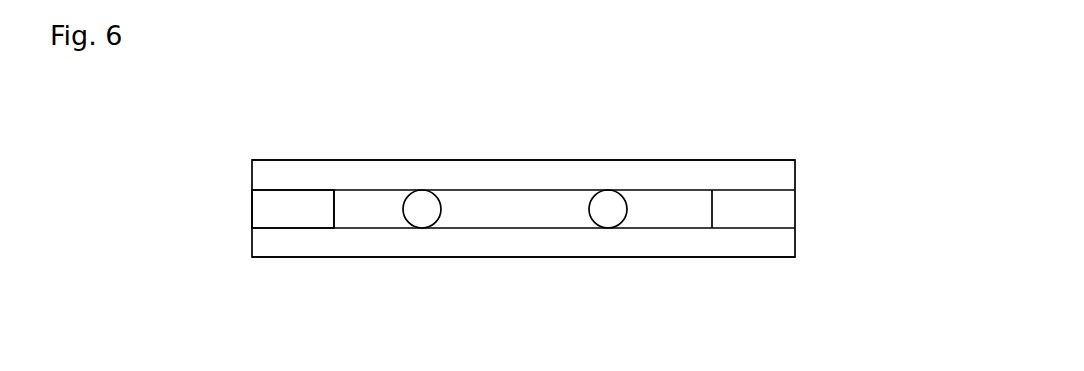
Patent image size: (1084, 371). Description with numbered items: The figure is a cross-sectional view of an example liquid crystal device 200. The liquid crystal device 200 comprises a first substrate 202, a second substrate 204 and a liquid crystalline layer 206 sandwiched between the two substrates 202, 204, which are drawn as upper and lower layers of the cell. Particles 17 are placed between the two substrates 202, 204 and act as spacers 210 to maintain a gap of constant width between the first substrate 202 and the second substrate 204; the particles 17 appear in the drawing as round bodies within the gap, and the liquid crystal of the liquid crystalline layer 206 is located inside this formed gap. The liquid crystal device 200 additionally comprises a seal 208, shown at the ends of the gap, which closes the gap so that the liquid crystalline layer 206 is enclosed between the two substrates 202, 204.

The liquid crystal device 200 is at (781, 145).
The first substrate 202 is at (783, 175).
The second substrate 204 is at (335, 242).
The liquid crystalline layer 206 is at (545, 209).
The seal 208 is at (280, 209).
The particles 17 is at (515, 170).
The spacers 210 is at (417, 208).